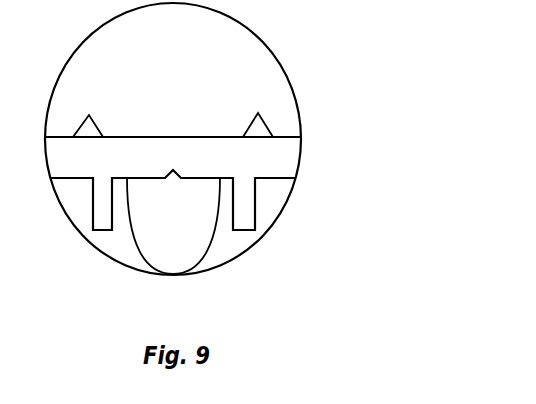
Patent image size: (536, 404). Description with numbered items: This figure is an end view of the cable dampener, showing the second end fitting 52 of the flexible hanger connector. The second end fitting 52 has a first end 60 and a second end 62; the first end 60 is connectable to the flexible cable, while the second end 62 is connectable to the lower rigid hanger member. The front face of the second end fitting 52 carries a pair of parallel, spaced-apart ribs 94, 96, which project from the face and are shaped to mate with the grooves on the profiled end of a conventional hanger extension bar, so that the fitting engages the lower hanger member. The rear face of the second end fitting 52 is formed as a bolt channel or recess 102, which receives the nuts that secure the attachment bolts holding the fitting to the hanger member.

The first end 60 is at (244, 38).
The second end fitting 52 is at (295, 85).
The second end 62 is at (293, 167).
The bolt channel or recess 102 is at (203, 218).
The rib 94 is at (91, 113).
The rib 96 is at (253, 112).